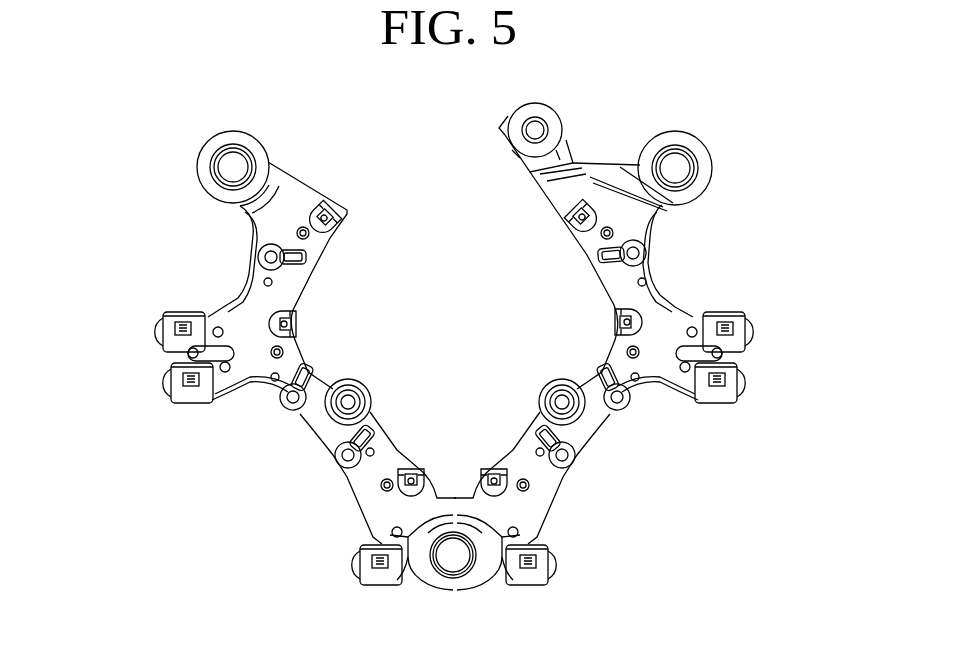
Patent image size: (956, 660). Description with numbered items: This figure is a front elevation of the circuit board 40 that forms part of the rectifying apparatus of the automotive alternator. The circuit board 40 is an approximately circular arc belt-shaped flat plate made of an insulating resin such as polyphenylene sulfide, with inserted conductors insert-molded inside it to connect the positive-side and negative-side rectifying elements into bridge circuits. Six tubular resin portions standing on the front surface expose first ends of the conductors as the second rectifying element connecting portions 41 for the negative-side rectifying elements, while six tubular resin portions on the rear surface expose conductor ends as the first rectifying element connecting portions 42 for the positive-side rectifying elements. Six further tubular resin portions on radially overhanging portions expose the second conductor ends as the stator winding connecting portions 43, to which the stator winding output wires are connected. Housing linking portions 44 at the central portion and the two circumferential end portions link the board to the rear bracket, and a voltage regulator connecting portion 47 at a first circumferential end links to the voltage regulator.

The circuit board 40 is at (160, 102).
The second rectifying element connecting portions 41 is at (260, 255).
The first rectifying element connecting portions 42 is at (343, 221).
The stator winding connecting portions 43 is at (163, 352).
The housing linking portions 44 is at (210, 182).
The voltage regulator connecting portion 47 is at (560, 118).